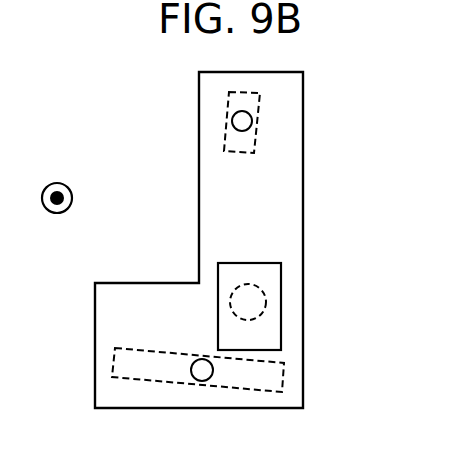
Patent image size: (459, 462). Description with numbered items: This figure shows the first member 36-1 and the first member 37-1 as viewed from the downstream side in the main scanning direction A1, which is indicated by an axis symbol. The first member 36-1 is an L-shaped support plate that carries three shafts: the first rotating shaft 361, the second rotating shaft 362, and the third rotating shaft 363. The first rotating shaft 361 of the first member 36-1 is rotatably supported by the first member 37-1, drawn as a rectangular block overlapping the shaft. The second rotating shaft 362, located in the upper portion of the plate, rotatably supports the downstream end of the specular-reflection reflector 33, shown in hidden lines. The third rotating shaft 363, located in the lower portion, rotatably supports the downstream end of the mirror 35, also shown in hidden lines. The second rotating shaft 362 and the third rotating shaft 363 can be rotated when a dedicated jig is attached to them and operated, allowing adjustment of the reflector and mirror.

The main scanning direction A1 is at (60, 182).
The specular-reflection reflector 33 is at (259, 97).
The mirror 35 is at (110, 358).
The first member 36-1 is at (157, 282).
The first member 37-1 is at (281, 273).
The first rotating shaft 361 is at (264, 309).
The second rotating shaft 362 is at (240, 121).
The third rotating shaft 363 is at (213, 372).